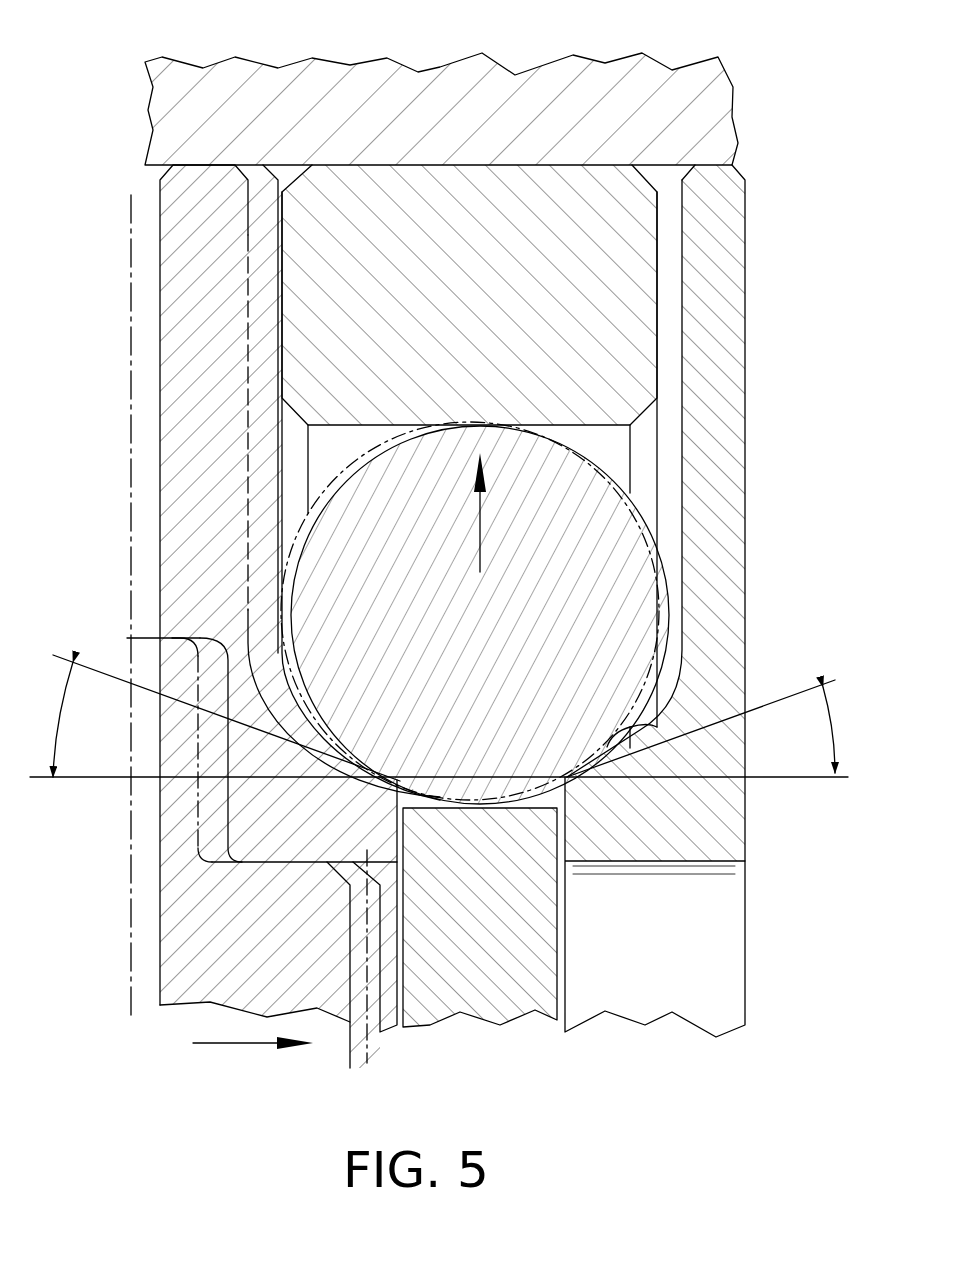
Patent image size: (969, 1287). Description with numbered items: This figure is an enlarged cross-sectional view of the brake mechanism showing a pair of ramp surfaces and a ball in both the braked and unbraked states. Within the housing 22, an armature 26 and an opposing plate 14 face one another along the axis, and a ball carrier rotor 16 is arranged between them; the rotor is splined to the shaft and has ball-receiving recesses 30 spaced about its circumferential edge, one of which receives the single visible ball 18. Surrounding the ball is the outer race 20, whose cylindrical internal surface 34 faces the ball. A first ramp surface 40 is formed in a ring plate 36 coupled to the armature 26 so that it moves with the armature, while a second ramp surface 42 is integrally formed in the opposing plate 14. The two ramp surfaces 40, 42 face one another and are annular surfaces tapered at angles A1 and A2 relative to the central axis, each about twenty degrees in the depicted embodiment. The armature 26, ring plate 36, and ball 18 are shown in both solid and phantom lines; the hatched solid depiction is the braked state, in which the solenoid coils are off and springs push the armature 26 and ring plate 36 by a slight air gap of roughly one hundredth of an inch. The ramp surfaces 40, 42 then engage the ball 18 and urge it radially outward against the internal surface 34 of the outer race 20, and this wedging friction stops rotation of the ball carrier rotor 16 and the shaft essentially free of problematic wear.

The opposing plate 14 is at (720, 525).
The ball carrier rotor 16 is at (498, 1000).
The ball 18 is at (592, 462).
The outer race 20 is at (317, 308).
The housing 22 is at (467, 107).
The armature 26 is at (197, 908).
The ball-receiving recess 30 is at (550, 795).
The cylindrical internal surface 34 is at (358, 424).
The ring plate 36 is at (188, 487).
The ramp surface 40 is at (353, 750).
The ramp surface 42 is at (607, 747).